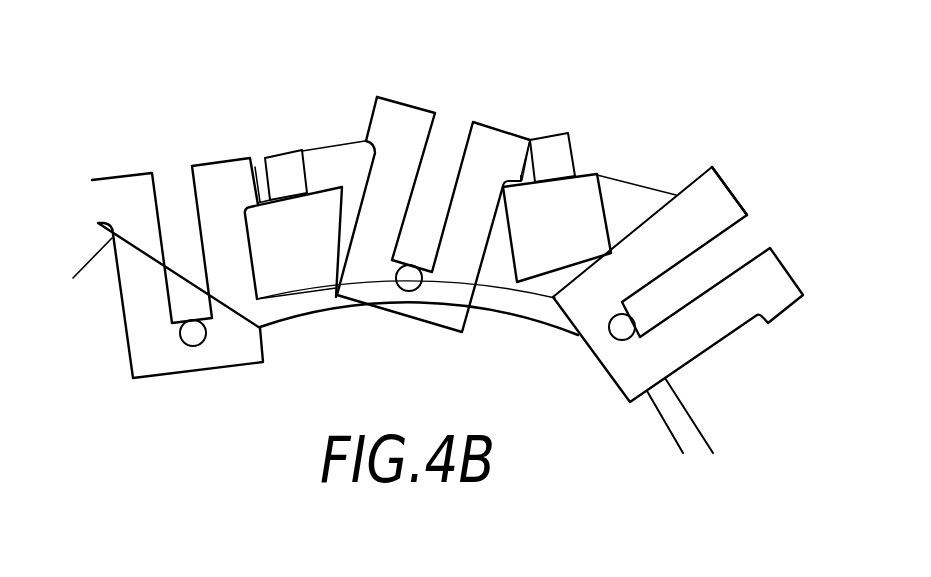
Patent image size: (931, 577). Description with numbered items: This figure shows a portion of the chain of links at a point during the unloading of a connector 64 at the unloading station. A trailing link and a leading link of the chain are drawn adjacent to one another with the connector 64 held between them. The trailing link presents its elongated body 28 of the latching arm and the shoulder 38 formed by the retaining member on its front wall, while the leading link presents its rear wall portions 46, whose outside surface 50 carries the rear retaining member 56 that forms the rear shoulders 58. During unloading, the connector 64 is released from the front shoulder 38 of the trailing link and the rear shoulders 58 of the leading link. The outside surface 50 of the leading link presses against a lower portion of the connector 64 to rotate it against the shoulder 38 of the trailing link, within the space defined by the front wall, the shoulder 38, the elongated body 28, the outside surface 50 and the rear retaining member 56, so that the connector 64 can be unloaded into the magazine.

The elongated body 28 is at (530, 312).
The shoulder 38 is at (520, 178).
The connector 64 is at (547, 150).
The outside surface 50 is at (633, 242).
The rear wall portions 46 is at (657, 232).
The rear retaining member 56 is at (693, 188).
The rear shoulders 58 is at (694, 207).